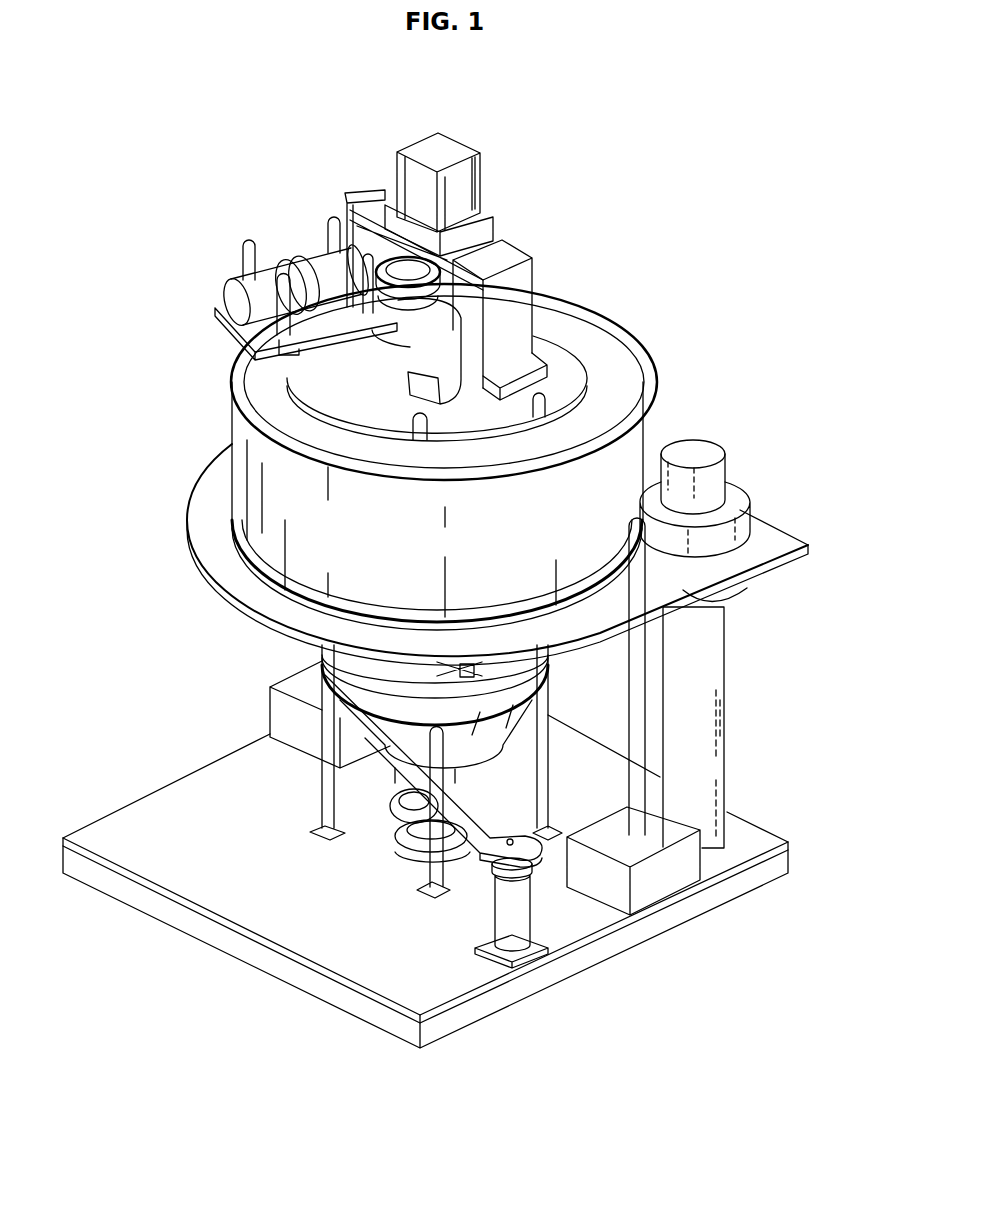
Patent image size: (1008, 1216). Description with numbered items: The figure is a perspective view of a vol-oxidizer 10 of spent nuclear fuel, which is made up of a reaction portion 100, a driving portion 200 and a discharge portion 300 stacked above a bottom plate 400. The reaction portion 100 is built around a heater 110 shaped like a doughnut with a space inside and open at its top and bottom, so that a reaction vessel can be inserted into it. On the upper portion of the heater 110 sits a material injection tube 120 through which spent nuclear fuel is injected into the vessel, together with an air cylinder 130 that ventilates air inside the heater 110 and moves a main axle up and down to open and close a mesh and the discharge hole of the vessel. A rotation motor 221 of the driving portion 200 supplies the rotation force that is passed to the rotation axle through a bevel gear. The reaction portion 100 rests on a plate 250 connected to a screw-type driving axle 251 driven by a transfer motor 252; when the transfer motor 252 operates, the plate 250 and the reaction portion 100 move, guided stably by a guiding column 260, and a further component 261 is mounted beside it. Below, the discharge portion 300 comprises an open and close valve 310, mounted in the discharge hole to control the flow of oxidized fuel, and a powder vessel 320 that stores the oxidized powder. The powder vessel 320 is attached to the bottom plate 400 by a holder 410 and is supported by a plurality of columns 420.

The vol-oxidizer 10 is at (118, 111).
The reaction portion 100 is at (222, 276).
The heater 110 is at (640, 428).
The material injection tube 120 is at (245, 323).
The air cylinder 130 is at (452, 143).
The driving portion 200 is at (183, 489).
The rotation motor 221 is at (317, 252).
The plate 250 is at (248, 592).
The driving axle 251 is at (638, 708).
The transfer motor 252 is at (680, 858).
The guiding column 260 is at (707, 637).
The drive motor 261 is at (745, 487).
The discharge portion 300 is at (313, 650).
The open and close valve 310 is at (470, 675).
The powder vessel 320 is at (372, 727).
The bottom plate 400 is at (397, 985).
The holder 410 is at (380, 824).
The columns 420 is at (415, 866).